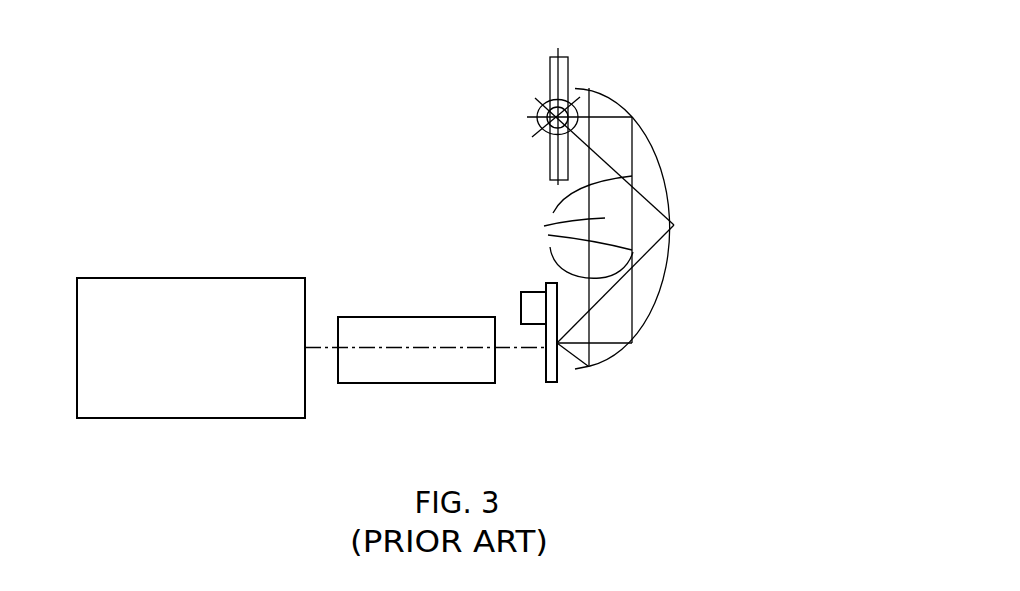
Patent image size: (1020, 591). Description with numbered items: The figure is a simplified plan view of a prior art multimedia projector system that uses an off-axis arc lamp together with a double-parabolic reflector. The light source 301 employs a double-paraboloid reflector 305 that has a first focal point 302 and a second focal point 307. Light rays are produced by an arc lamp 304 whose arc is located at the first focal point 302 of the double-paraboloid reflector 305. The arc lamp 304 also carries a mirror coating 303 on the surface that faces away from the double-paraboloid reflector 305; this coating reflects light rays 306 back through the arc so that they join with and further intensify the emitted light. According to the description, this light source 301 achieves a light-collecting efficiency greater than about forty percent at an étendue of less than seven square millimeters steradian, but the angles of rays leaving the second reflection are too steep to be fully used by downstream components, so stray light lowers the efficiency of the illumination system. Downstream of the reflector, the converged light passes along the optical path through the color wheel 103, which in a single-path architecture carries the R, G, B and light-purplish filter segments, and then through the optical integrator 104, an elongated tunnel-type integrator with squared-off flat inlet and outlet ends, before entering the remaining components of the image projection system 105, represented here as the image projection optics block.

The color wheel 103 is at (546, 283).
The optical integrator 104 is at (397, 326).
The image projection system 105 is at (125, 278).
The light source 301 is at (733, 170).
The first focal point 302 is at (545, 132).
The mirror coating 303 is at (527, 117).
The arc lamp 304 is at (582, 63).
The double-paraboloid reflector 305 is at (642, 333).
The light rays 306 is at (566, 227).
The second focal point 307 is at (572, 353).